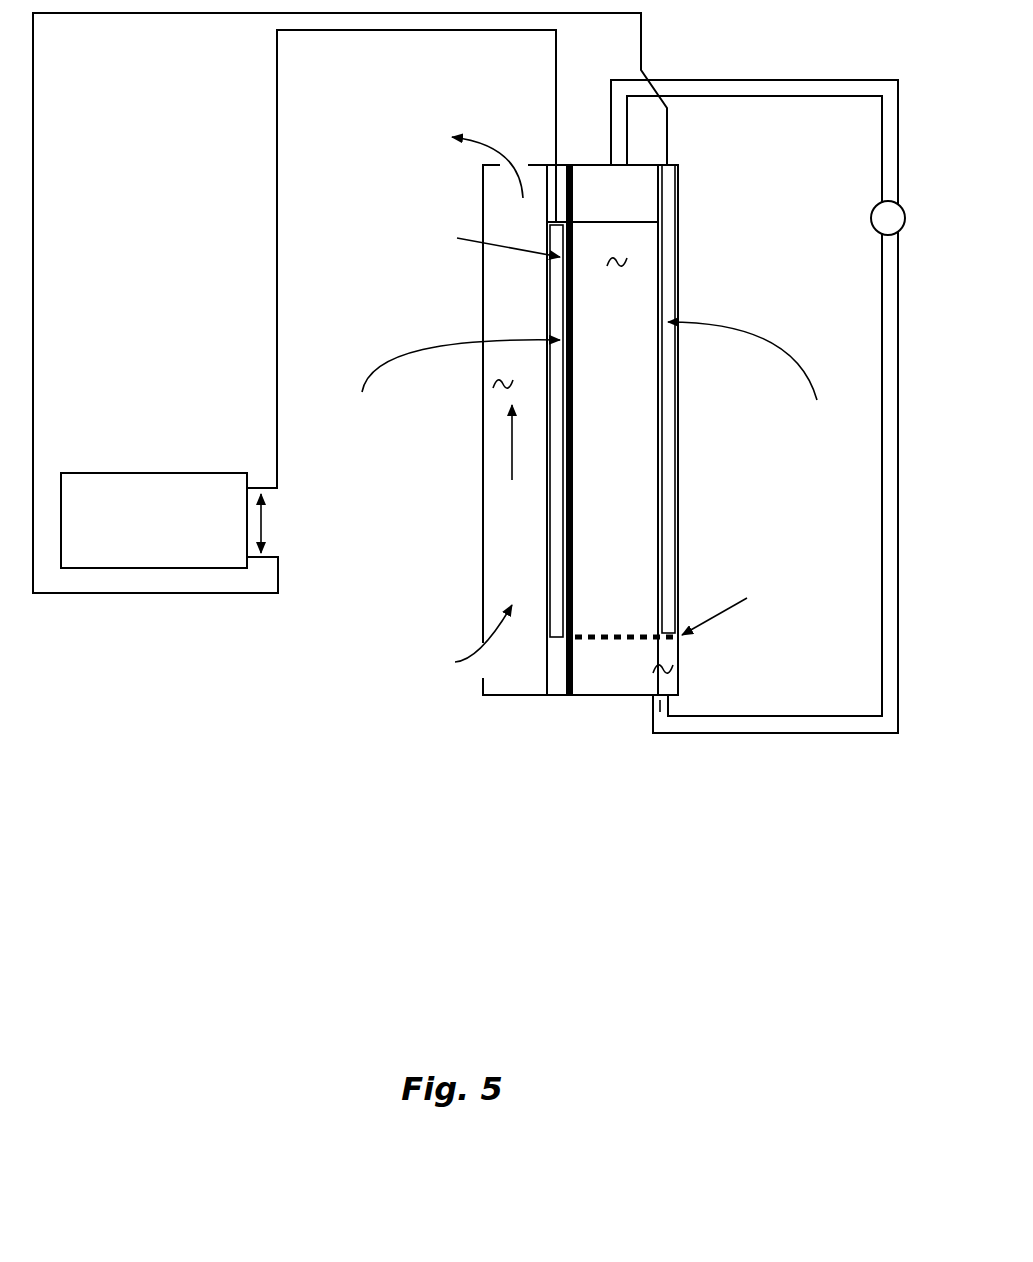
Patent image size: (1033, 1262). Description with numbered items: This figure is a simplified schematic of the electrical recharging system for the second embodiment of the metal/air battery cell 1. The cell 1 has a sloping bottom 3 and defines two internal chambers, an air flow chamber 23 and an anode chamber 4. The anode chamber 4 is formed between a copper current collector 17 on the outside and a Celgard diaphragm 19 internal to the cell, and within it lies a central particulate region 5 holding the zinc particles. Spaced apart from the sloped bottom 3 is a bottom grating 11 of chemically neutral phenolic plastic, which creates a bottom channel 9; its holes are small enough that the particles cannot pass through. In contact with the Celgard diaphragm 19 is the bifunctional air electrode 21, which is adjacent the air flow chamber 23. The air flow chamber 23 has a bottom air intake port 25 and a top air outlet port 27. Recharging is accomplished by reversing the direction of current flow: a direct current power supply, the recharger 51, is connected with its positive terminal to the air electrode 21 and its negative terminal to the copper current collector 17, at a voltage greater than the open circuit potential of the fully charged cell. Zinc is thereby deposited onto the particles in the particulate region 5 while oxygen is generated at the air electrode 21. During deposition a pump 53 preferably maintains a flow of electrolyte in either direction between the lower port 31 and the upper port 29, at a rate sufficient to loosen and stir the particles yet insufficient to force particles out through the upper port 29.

The metal/air battery cell 1 is at (368, 645).
The sloping bottom 3 is at (585, 697).
The anode chamber 4 is at (590, 156).
The central particulate region 5 is at (620, 268).
The bottom channel 9 is at (676, 653).
The bottom grating 11 is at (625, 640).
The copper current collector 17 is at (683, 188).
The Celgard diaphragm 19 is at (571, 163).
The air electrode 21 is at (543, 322).
The air flow chamber 23 is at (500, 392).
The bottom air intake port 25 is at (471, 671).
The top air outlet port 27 is at (517, 150).
The upper port 29 is at (618, 163).
The lower port 31 is at (660, 712).
The recharger 51 is at (184, 473).
The pump 53 is at (871, 222).